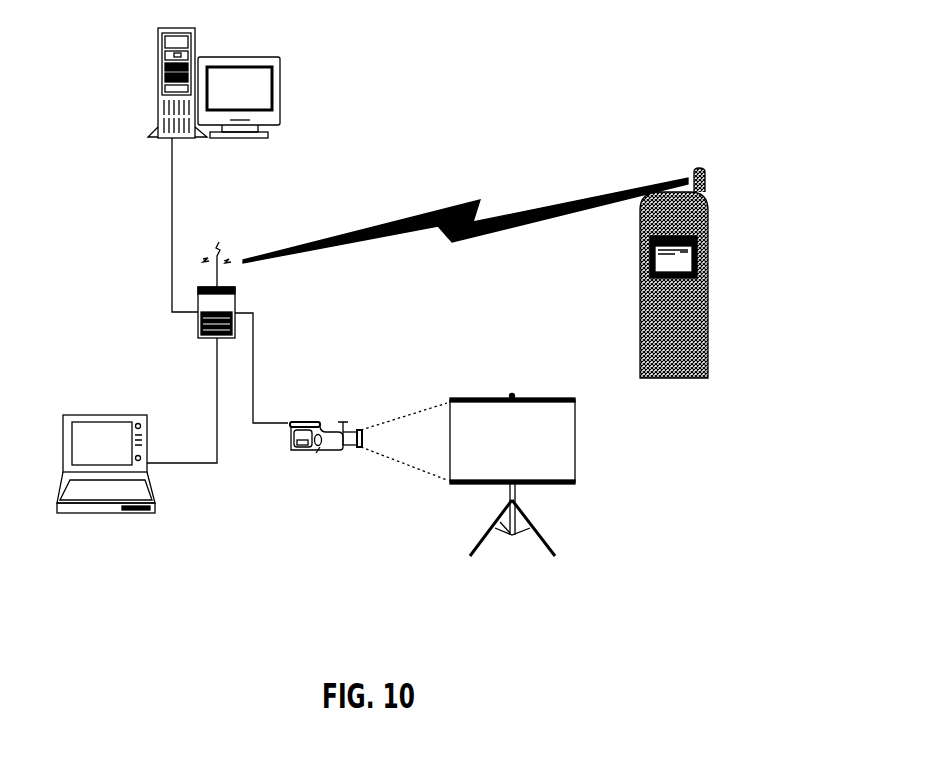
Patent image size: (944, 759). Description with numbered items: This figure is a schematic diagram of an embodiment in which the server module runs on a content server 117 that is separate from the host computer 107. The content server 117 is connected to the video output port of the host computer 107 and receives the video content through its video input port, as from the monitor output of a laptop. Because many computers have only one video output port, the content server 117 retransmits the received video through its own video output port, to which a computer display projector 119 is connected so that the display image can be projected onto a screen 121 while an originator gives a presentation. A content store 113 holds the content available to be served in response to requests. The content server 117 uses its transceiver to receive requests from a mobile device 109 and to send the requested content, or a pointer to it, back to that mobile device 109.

The host computer 107 is at (102, 513).
The mobile device 109 is at (708, 375).
The content store 113 is at (158, 82).
The content server 117 is at (198, 322).
The computer display projector 119 is at (321, 452).
The screen 121 is at (580, 486).